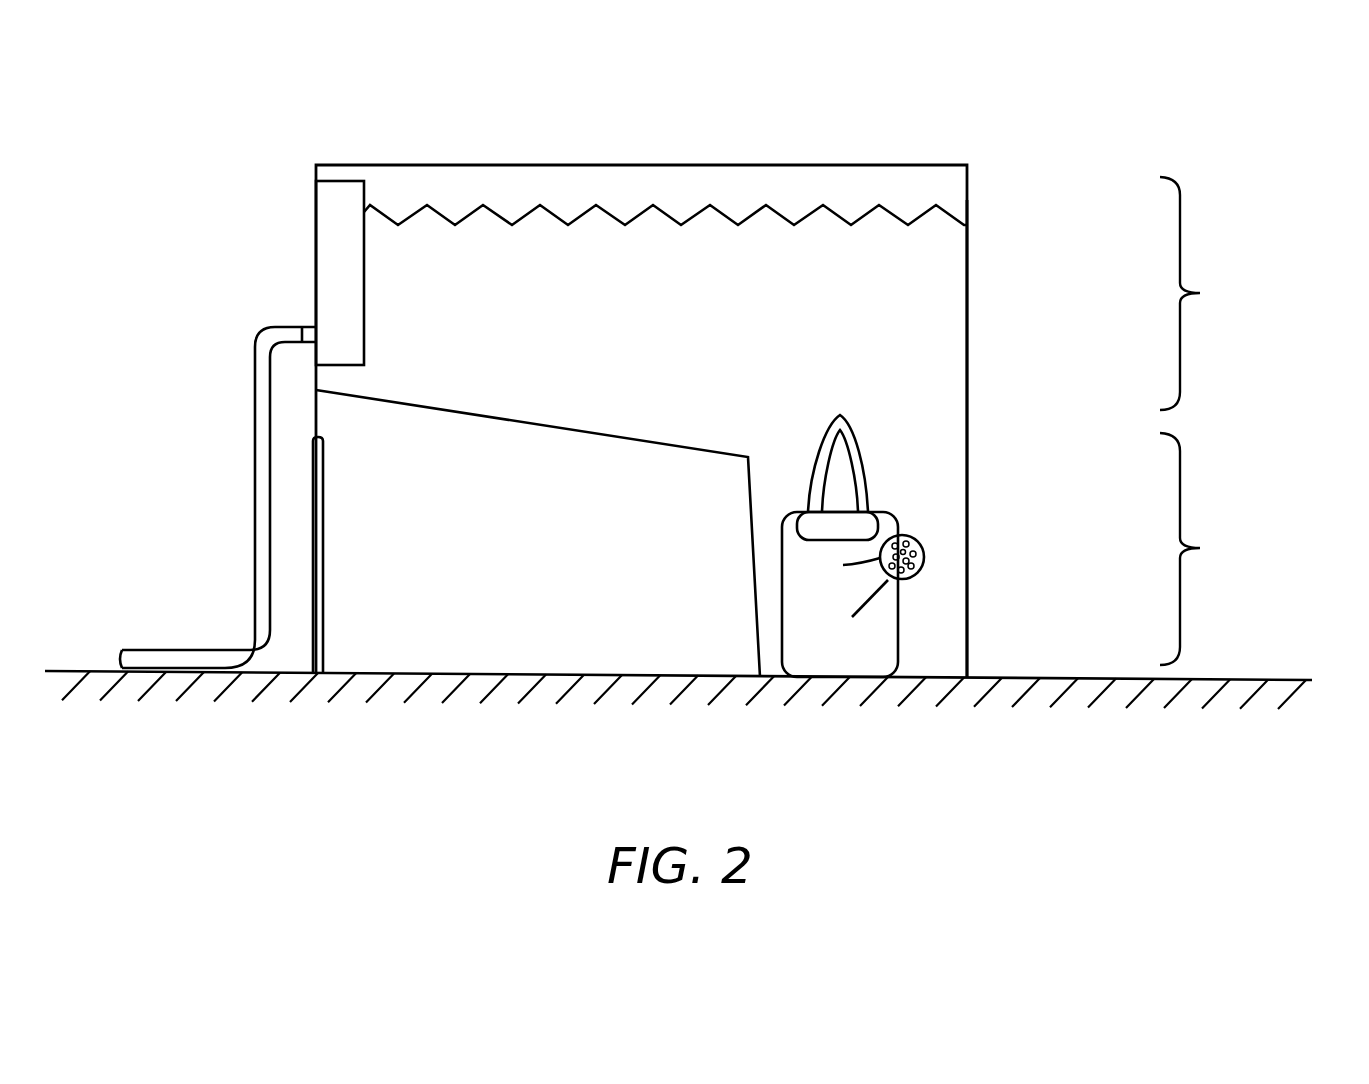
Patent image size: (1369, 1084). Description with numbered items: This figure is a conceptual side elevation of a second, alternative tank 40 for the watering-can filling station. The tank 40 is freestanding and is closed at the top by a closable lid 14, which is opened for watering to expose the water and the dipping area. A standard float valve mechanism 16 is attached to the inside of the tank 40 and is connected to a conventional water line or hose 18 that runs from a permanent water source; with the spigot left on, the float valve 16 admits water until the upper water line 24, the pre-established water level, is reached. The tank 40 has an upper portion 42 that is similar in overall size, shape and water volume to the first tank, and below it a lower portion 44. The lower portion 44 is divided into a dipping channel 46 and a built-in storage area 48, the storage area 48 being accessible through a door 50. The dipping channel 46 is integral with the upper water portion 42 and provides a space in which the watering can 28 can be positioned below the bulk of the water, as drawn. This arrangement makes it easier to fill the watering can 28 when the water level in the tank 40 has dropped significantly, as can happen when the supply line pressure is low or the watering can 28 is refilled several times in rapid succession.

The closable lid 14 is at (878, 165).
The float valve mechanism 16 is at (331, 246).
The water line or hose 18 is at (262, 495).
The upper water line 24 is at (967, 204).
The watering can 28 is at (853, 650).
The second tank 40 is at (968, 338).
The upper portion 42 is at (1201, 293).
The lower portion 44 is at (1201, 549).
The dipping channel 46 is at (938, 598).
The storage area 48 is at (502, 559).
The door 50 is at (310, 642).